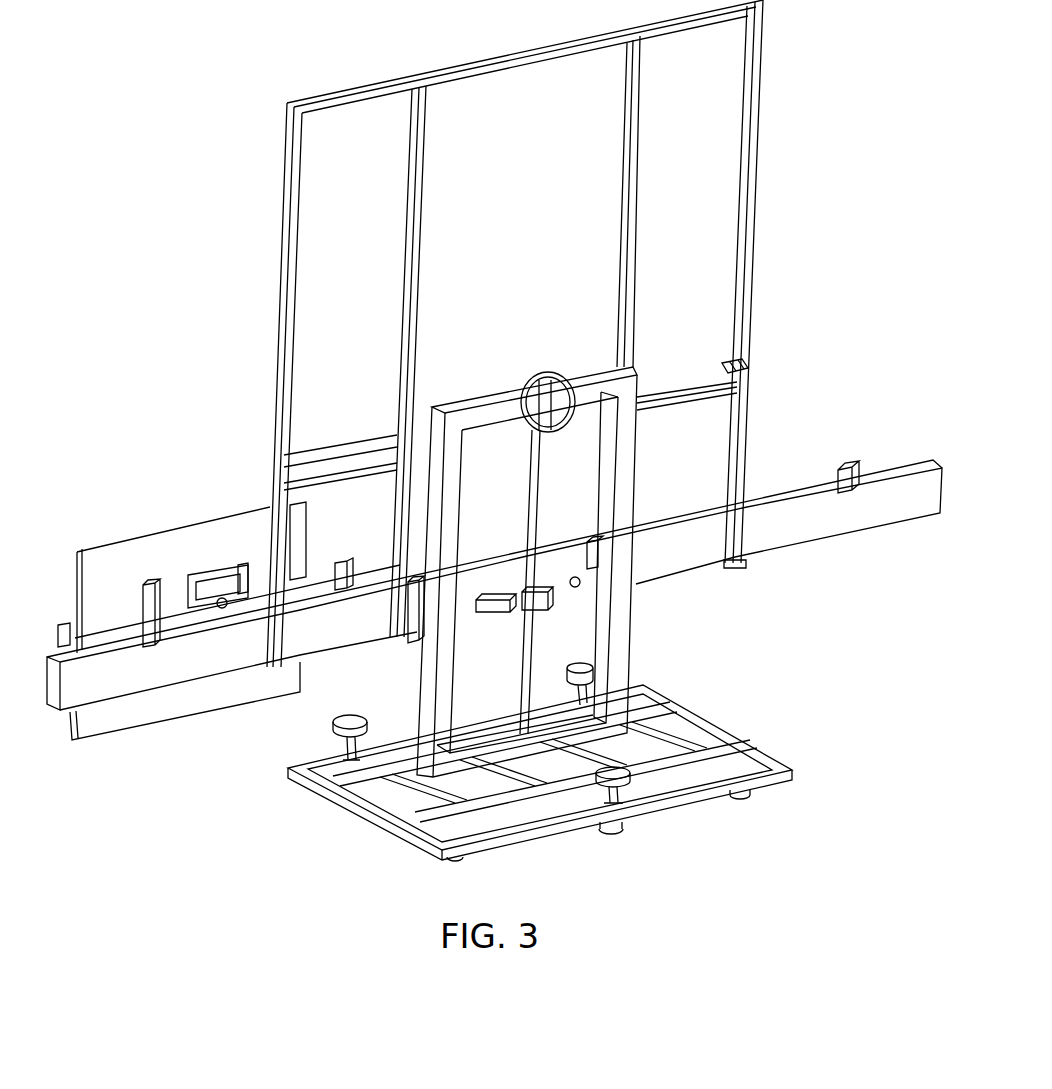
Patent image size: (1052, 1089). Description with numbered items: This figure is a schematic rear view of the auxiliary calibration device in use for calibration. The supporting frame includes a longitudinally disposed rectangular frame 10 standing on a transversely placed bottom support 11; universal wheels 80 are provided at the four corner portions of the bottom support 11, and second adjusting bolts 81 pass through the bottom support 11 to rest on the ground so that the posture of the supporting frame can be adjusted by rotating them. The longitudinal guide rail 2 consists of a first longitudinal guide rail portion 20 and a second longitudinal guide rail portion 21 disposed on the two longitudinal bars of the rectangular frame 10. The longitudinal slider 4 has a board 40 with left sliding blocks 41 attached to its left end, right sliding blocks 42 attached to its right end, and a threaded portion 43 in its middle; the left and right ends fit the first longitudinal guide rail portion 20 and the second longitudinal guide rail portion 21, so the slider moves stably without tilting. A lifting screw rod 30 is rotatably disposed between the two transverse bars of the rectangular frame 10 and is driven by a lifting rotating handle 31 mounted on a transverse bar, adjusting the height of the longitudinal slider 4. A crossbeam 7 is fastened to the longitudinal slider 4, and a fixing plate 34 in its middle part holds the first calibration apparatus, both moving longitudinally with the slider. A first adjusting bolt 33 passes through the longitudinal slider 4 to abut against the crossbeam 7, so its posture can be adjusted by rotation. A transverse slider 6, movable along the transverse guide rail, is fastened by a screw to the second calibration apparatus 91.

The longitudinal guide rail 2 is at (213, 272).
The first longitudinal guide rail portion 20 is at (612, 365).
The second longitudinal guide rail portion 21 is at (435, 402).
The fixing plate 34 is at (370, 226).
The rectangular frame 10 is at (612, 653).
The lifting rotating handle 31 is at (527, 426).
The lifting screw rod 30 is at (530, 493).
The board 40 is at (576, 598).
The right sliding block 42 is at (590, 556).
The first adjusting bolt 33 is at (582, 583).
The longitudinal slider 4 is at (560, 603).
The threaded portion 43 is at (502, 602).
The left sliding block 41 is at (410, 637).
The crossbeam 7 is at (100, 685).
The transverse slider 6 is at (183, 615).
The second calibration apparatus 91 is at (237, 690).
The universal wheel 80 is at (786, 768).
The bottom support 11 is at (650, 724).
The second adjusting bolt 81 is at (630, 762).